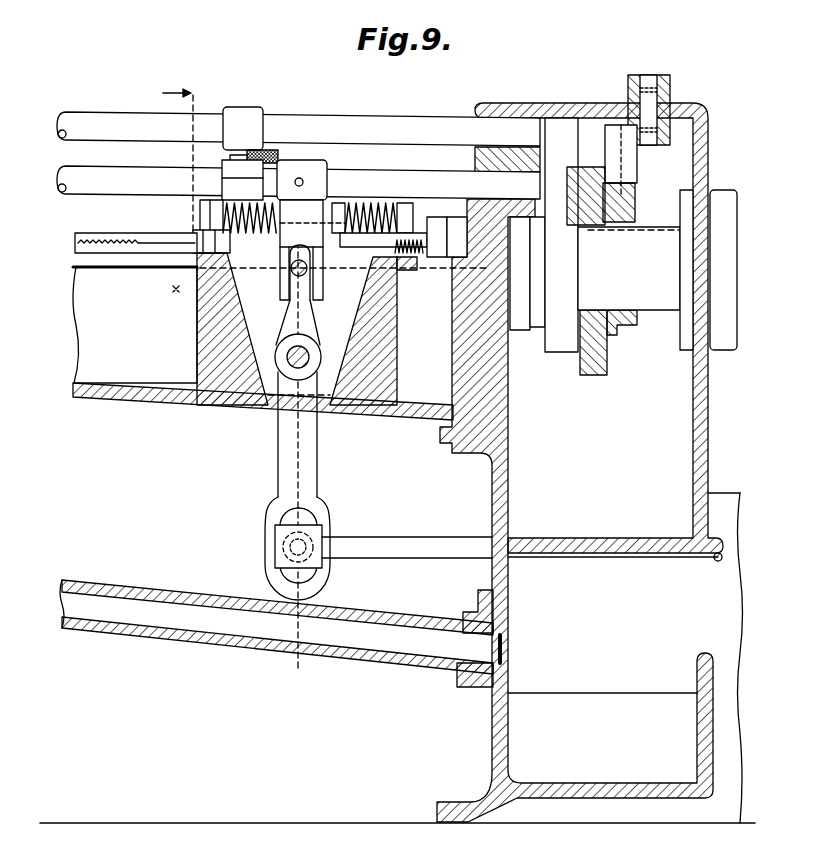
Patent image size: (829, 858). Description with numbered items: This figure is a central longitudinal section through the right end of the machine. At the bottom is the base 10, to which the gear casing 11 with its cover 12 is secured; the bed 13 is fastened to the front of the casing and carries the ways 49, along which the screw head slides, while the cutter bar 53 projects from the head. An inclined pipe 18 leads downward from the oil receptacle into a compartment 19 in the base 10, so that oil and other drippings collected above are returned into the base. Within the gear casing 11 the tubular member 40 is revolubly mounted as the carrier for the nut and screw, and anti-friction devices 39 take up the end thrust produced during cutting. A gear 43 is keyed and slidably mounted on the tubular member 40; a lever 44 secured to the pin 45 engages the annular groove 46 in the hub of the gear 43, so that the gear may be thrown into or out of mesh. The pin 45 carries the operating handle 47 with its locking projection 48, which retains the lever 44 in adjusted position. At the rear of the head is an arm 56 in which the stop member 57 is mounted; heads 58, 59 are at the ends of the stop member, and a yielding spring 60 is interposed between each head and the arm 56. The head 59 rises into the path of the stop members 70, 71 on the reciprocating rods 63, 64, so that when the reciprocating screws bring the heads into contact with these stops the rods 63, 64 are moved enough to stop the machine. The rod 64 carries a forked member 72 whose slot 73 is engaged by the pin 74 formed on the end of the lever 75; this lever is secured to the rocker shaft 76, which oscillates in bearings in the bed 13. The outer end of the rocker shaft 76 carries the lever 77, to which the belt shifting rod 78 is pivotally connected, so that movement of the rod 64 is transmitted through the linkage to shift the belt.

The base 10 is at (488, 788).
The gear casing 11 is at (710, 433).
The cover 12 is at (706, 158).
The bed 13 is at (178, 400).
The inclined pipe 18 is at (380, 658).
The compartment 19 is at (683, 748).
The anti-friction devices 39 is at (537, 326).
The tubular member 40 is at (660, 300).
The gear 43 is at (583, 374).
The lever 44 is at (602, 153).
The pin 45 is at (648, 76).
The annular groove 46 is at (620, 331).
The operating handle 47 is at (672, 82).
The locking projection 48 is at (197, 278).
The ways 49 is at (103, 260).
The cutter bar 53 is at (104, 246).
The arm 56 is at (338, 204).
The stop member 57 is at (221, 263).
The head 58 is at (403, 207).
The head 59 is at (212, 205).
The yielding spring 60 is at (387, 204).
The reciprocating rod 63 is at (100, 122).
The reciprocating rod 64 is at (75, 176).
The stop member 70 is at (236, 112).
The stop member 71 is at (232, 172).
The forked member 72 is at (306, 162).
The slot 73 is at (303, 292).
The pin 74 is at (293, 269).
The lever 75 is at (286, 314).
The rocker shaft 76 is at (286, 357).
The lever 77 is at (278, 452).
The belt shifting rod 78 is at (389, 545).